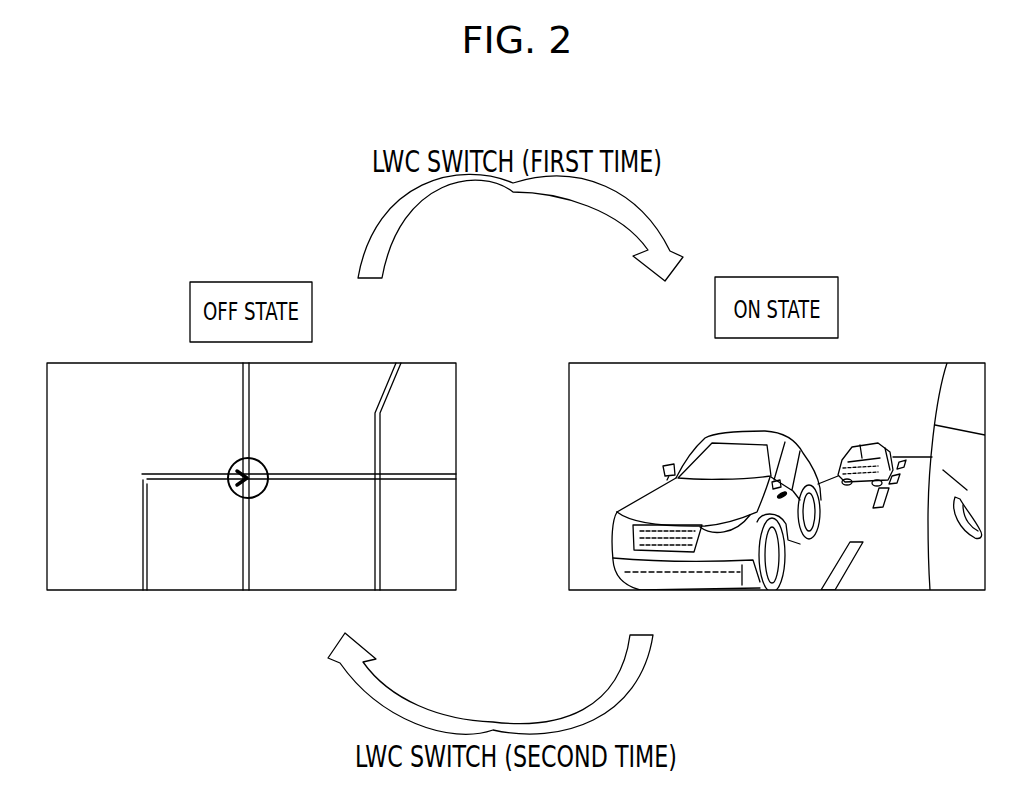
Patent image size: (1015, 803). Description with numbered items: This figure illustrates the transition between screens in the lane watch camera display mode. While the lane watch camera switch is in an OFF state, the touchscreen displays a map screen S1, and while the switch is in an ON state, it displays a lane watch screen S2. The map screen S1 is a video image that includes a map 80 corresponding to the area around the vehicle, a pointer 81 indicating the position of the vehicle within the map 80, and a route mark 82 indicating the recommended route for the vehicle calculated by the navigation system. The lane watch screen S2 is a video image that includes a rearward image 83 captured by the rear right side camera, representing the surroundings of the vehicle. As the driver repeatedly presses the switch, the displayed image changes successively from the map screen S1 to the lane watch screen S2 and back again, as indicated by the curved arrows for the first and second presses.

The map screen S1 is at (107, 362).
The lane watch screen S2 is at (615, 362).
The map 80 is at (422, 388).
The pointer 81 is at (240, 458).
The route mark 82 is at (300, 473).
The rearward image 83 is at (892, 388).